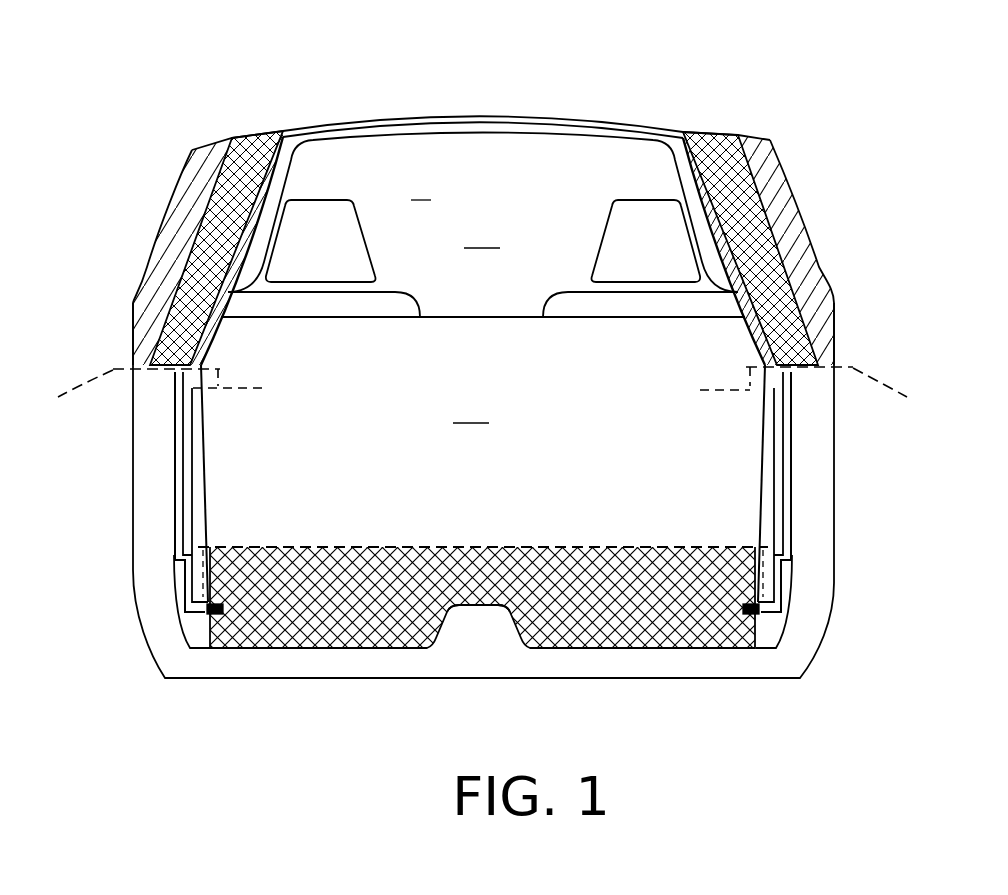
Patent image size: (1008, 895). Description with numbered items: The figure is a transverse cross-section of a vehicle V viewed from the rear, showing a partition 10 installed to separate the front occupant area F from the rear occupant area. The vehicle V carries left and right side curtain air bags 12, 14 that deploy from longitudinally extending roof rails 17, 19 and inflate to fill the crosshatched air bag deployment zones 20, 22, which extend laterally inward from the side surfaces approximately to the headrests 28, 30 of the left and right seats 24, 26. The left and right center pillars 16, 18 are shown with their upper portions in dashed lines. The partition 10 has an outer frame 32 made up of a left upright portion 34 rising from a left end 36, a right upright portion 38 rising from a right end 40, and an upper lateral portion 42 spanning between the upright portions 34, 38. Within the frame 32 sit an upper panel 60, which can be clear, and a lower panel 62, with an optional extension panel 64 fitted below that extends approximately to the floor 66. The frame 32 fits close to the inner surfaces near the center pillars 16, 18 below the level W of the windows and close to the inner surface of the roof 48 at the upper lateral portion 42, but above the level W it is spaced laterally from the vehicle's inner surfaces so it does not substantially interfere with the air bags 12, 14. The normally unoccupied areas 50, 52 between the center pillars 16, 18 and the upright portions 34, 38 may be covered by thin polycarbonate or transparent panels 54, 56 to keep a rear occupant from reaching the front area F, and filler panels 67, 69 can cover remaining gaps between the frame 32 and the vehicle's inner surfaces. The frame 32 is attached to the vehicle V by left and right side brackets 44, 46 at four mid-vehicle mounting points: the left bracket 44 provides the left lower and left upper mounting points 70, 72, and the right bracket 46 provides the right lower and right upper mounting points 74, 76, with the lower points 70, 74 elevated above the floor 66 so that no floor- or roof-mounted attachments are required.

The partition 10 is at (678, 117).
The left side curtain air bag 12 is at (177, 208).
The right side curtain air bag 14 is at (782, 213).
The left center pillar 16 is at (163, 328).
The left roof rail 17 is at (197, 153).
The right center pillar 18 is at (803, 328).
The right roof rail 19 is at (777, 156).
The left air bag deployment zone 20 is at (288, 200).
The right air bag deployment zone 22 is at (681, 185).
The left seat 24 is at (410, 294).
The right seat 26 is at (553, 303).
The left headrest 28 is at (378, 236).
The right headrest 30 is at (606, 222).
The outer frame 32 is at (203, 342).
The left upright portion 34 is at (198, 452).
The left end 36 is at (215, 605).
The right upright portion 38 is at (767, 447).
The right end 40 is at (760, 593).
The upper lateral portion 42 is at (455, 133).
The left side bracket 44 is at (177, 469).
The right side bracket 46 is at (788, 470).
The roof 48 is at (515, 117).
The left area 50 is at (220, 190).
The right area 52 is at (723, 137).
The left panel 54 is at (213, 248).
The right panel 56 is at (770, 255).
The upper panel 60 is at (482, 235).
The lower panel 62 is at (471, 410).
The extension panel 64 is at (480, 585).
The floor 66 is at (318, 652).
The left filler panel 67 is at (180, 483).
The right filler panel 69 is at (780, 483).
The left lower mounting point 70 is at (222, 616).
The left upper mounting point 72 is at (247, 387).
The right lower mounting point 74 is at (757, 612).
The right upper mounting point 76 is at (696, 386).
The front occupant area F is at (421, 187).
The vehicle V is at (210, 142).
The level of the windows W is at (464, 392).